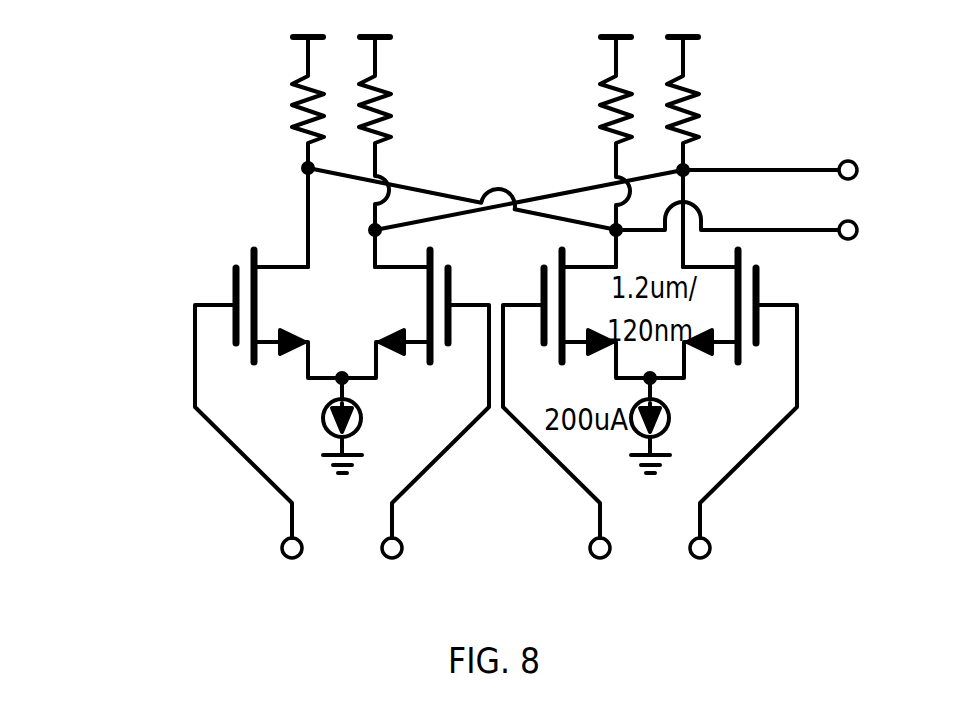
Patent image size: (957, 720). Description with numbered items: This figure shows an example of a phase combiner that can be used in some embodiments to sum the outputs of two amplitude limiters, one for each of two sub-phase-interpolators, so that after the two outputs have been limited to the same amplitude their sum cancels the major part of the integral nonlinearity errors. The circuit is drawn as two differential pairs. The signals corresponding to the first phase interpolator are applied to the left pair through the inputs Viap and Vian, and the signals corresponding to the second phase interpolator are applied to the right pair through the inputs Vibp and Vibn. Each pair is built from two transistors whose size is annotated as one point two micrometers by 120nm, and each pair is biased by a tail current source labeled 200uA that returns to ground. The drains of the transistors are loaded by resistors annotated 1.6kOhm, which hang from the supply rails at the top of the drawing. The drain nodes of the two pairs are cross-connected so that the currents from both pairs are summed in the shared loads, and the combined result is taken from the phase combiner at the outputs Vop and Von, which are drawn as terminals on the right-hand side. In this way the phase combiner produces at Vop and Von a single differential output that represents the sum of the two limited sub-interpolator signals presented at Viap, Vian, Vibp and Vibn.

The load resistor 1.6kOhm is at (248, 152).
The differential pair transistors (1.2um/120nm) 120nm is at (342, 314).
The tail current source 200uA is at (299, 423).
The input Viap is at (251, 460).
The input Vian is at (420, 460).
The input Vibp is at (565, 460).
The input Vibn is at (728, 459).
The output Von is at (807, 169).
The output Vop is at (774, 225).